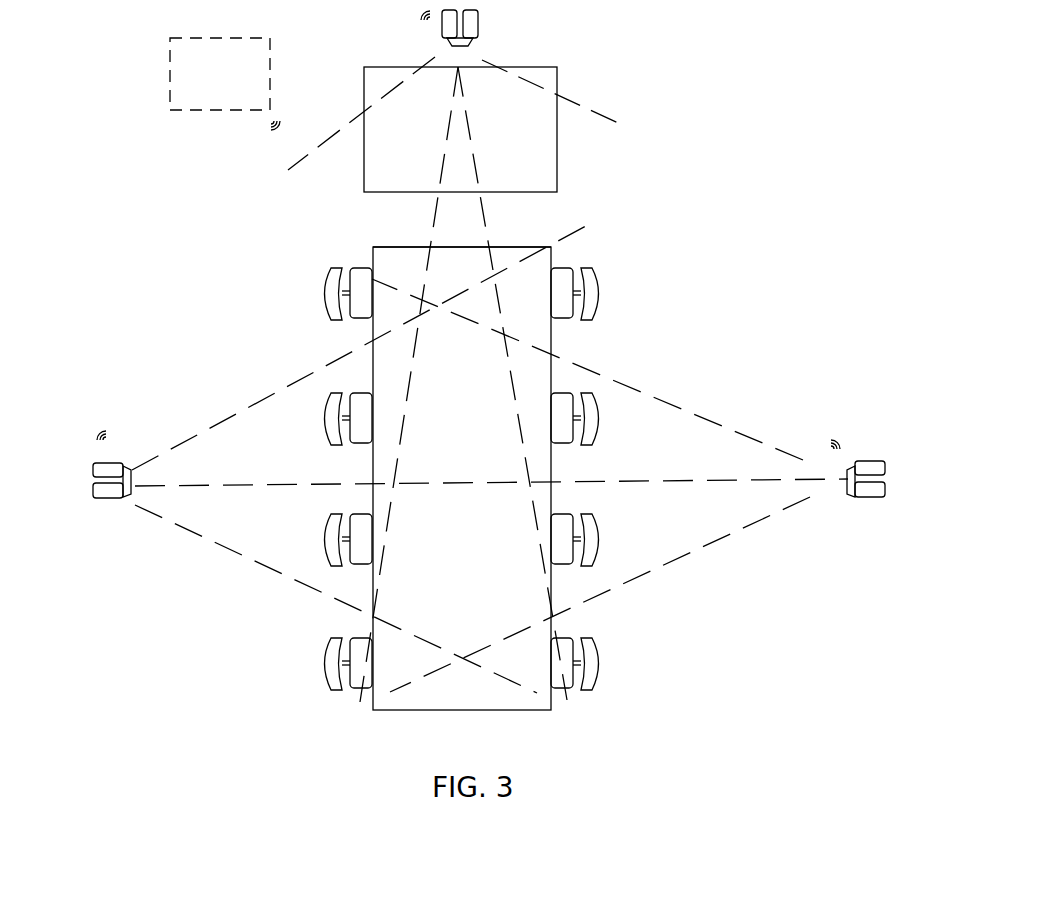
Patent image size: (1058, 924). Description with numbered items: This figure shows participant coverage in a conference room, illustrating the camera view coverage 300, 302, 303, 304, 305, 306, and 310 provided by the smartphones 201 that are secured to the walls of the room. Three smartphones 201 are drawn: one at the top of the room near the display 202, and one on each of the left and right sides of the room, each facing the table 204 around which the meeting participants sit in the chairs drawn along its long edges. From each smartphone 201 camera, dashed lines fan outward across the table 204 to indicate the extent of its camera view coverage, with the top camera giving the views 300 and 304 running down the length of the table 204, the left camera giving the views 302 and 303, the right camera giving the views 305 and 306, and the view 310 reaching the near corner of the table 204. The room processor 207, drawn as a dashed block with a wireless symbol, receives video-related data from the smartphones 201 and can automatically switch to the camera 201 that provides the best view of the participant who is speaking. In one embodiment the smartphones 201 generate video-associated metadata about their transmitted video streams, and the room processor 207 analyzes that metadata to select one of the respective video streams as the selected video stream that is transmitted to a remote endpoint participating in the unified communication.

The smartphone 201 is at (488, 25).
The display 202 is at (524, 131).
The table 204 is at (479, 601).
The room processor 207 is at (239, 84).
The camera view coverage 300 is at (585, 165).
The camera view coverage 302 is at (273, 423).
The camera view coverage 303 is at (280, 525).
The camera view coverage 304 is at (517, 235).
The camera view coverage 305 is at (663, 435).
The camera view coverage 306 is at (665, 537).
The camera view coverage 310 is at (370, 253).